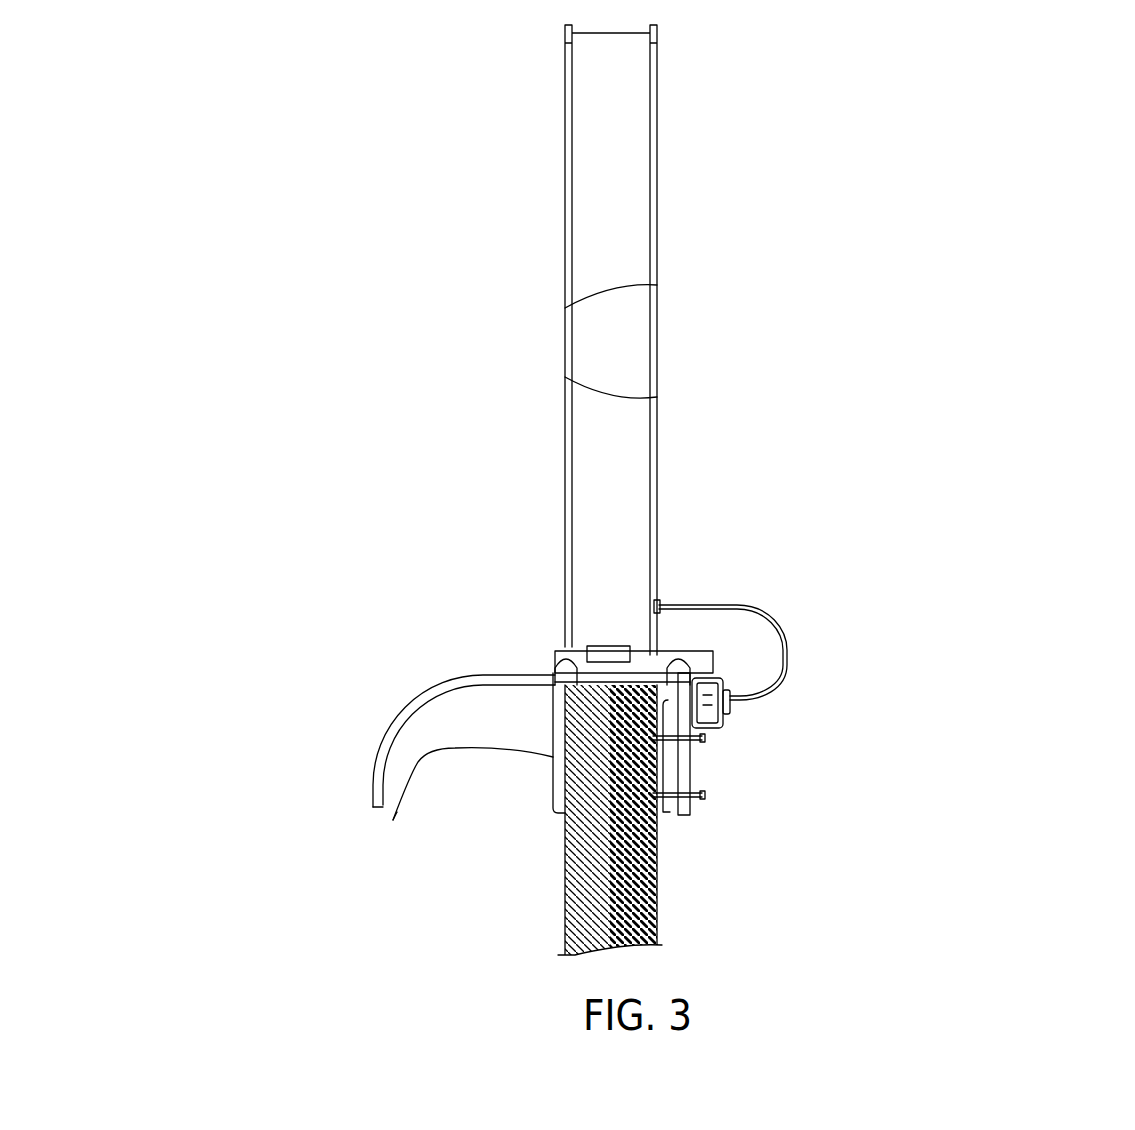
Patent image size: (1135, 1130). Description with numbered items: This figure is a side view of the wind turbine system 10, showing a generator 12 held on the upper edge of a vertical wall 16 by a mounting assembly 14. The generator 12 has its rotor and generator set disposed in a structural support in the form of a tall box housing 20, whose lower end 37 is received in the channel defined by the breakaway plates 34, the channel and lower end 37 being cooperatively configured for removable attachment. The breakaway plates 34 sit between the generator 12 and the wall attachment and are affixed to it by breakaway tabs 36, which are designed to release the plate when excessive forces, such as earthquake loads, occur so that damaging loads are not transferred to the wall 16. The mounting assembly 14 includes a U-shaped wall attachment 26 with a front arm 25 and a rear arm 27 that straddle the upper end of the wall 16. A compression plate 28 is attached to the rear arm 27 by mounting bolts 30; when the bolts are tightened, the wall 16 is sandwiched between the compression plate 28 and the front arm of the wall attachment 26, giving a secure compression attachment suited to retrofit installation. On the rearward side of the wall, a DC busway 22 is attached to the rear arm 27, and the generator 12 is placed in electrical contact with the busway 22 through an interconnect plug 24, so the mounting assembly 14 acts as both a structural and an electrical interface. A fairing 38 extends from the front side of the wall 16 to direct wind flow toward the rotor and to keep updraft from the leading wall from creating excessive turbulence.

The wind turbine system 10 is at (347, 160).
The generator 12 is at (745, 183).
The mounting assembly 14 is at (262, 758).
The wall 16 is at (567, 862).
The box housing 20 is at (657, 427).
The DC busway 22 is at (725, 728).
The plug 24 is at (733, 707).
The front arm 25 is at (388, 842).
The U-shaped wall attachment 26 is at (553, 738).
The rear arm 27 is at (690, 753).
The compression plate 28 is at (657, 815).
The mounting bolts 30 is at (702, 795).
The breakaway plates 34 is at (713, 653).
The breakaway tabs 36 is at (552, 658).
The lower end 37 is at (610, 650).
The fairing 38 is at (400, 727).